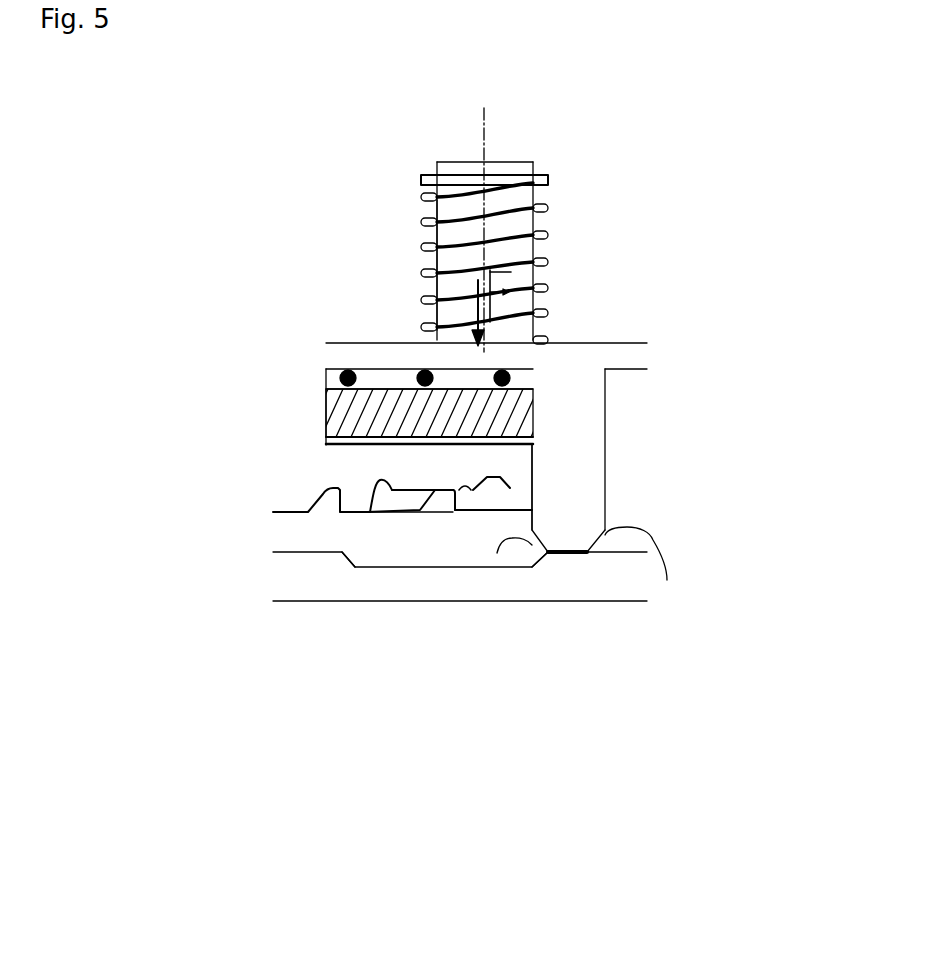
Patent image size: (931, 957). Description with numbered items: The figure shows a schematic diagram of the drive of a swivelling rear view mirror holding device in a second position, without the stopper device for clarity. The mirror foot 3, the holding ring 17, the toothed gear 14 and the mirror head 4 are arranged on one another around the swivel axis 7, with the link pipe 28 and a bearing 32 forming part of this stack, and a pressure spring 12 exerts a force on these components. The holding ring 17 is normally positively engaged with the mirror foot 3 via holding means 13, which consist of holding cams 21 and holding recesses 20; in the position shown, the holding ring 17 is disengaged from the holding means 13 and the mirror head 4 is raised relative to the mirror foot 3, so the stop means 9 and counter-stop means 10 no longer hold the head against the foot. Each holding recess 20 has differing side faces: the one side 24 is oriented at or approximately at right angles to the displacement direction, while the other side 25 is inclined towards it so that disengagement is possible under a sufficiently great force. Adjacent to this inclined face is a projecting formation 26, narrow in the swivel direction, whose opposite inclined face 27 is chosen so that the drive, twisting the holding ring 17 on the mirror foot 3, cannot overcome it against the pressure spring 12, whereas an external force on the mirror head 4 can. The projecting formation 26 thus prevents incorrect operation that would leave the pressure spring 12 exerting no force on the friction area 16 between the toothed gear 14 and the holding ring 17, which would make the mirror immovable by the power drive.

The mirror foot 3 is at (528, 168).
The mirror head 4 is at (598, 345).
The swivel axis 7 is at (483, 128).
The stop means 9 is at (353, 568).
The counter-stop means 10 is at (667, 580).
The pressure spring 12 is at (548, 200).
The holding means 13 is at (365, 483).
The toothed gear 14 is at (347, 412).
The friction area 16 is at (360, 453).
The holding ring 17 is at (372, 460).
The holding recesses 20 is at (505, 487).
The holding cams 21 is at (290, 497).
The side 24 is at (398, 487).
The other side 25 is at (395, 500).
The projecting formation 26 is at (460, 497).
The inclined face 27 is at (470, 510).
The link pipe 28 is at (453, 263).
The bearing 32 is at (327, 373).